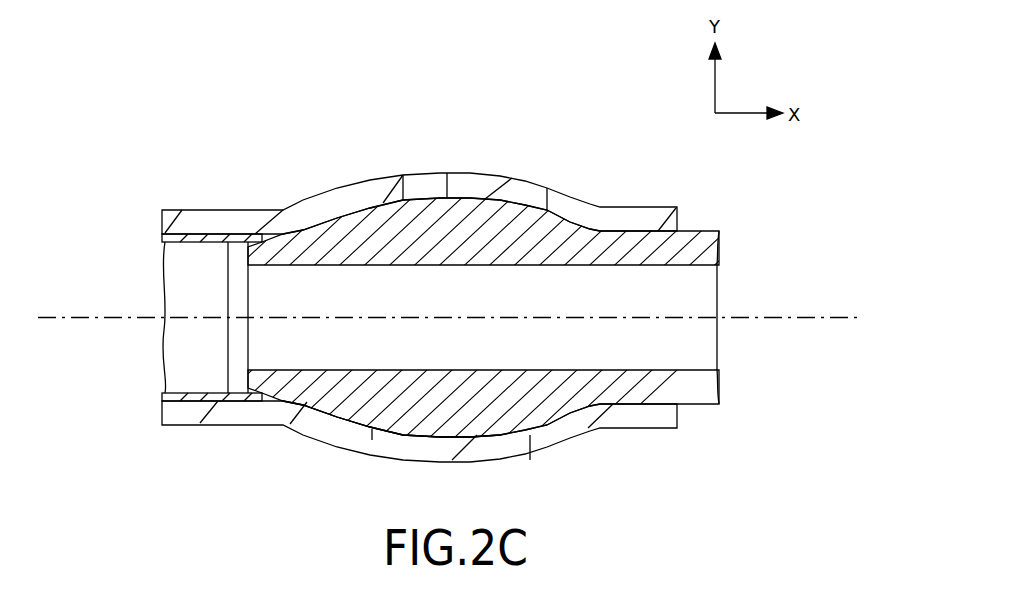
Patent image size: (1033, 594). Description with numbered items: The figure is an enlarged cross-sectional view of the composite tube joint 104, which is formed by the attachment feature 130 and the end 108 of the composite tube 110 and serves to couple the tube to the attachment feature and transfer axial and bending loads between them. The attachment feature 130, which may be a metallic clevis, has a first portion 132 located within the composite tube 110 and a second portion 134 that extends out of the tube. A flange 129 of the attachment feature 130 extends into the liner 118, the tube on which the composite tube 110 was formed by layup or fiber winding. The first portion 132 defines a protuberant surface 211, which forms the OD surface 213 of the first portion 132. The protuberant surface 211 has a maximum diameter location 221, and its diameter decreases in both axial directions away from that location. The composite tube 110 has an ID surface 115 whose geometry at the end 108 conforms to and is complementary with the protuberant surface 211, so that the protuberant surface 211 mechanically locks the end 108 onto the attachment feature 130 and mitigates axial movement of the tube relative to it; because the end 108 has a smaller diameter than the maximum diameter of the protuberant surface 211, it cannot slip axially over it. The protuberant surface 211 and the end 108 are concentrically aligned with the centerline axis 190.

The composite tube joint 104 is at (627, 128).
The end of composite tube 108 is at (648, 207).
The composite tube 110 is at (262, 210).
The ID surface 115 is at (407, 433).
The liner 118 is at (170, 244).
The flange 129 is at (241, 262).
The attachment feature 130 is at (707, 231).
The first portion 132 is at (582, 404).
The second portion 134 is at (705, 405).
The centerline axis 190 is at (45, 319).
The protuberant surface 211 is at (406, 178).
The OD surface 213 is at (557, 188).
The maximum diameter location 221 is at (447, 176).